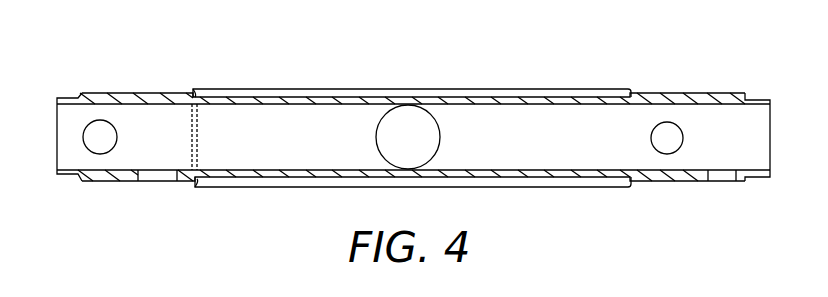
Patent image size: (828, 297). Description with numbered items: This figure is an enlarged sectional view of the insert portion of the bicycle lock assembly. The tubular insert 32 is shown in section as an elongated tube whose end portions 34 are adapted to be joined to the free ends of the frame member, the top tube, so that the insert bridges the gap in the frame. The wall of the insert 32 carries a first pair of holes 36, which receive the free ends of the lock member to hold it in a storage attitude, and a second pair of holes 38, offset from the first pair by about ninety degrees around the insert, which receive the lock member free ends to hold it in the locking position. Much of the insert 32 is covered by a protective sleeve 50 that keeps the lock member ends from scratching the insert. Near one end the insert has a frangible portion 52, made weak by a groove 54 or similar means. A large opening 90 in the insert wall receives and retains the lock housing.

The tubular insert 32 is at (162, 60).
The end portions 34 is at (69, 97).
The first pair of holes 36 is at (150, 183).
The second pair of holes 38 is at (114, 133).
The protective sleeve 50 is at (490, 89).
The frangible portion 52 is at (196, 95).
The groove 54 is at (200, 137).
The opening 90 is at (433, 135).